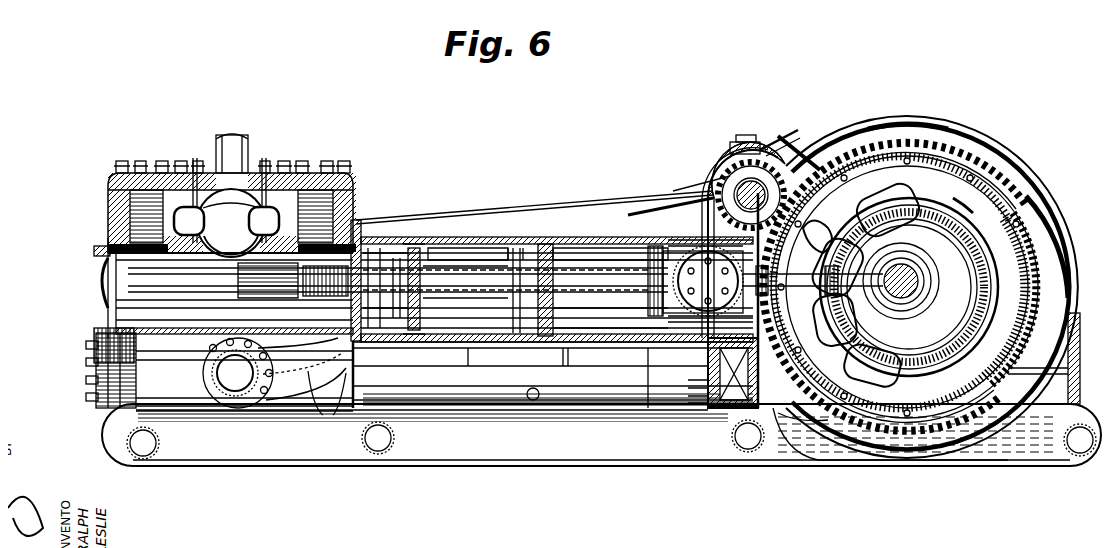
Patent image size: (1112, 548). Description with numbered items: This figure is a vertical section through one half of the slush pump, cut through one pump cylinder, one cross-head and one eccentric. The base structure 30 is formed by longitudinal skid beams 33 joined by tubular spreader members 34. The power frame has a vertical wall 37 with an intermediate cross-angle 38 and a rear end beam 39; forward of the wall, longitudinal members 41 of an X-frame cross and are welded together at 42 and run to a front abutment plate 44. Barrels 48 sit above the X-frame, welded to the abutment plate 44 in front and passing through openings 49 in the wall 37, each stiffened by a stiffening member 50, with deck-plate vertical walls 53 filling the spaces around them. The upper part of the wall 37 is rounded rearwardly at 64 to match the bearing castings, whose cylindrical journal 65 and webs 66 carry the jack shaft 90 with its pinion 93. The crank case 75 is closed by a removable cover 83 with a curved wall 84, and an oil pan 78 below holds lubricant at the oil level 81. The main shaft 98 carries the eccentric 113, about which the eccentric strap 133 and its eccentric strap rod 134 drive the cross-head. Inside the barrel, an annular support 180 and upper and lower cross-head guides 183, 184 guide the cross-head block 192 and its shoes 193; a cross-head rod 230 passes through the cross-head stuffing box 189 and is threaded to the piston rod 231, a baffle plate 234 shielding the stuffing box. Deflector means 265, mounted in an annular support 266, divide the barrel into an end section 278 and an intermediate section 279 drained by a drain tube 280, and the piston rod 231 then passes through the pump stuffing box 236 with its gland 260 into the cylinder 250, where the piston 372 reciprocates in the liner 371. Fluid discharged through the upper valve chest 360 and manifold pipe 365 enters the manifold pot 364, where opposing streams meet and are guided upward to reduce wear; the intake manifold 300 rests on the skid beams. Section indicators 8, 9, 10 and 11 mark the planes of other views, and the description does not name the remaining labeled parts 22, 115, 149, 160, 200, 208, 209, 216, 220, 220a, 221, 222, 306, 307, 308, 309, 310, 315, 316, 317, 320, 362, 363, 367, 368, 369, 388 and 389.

The section line 8- 8 is at (385, 195).
The section line 9- 9 is at (422, 225).
The section line 10- 10 is at (562, 213).
The section line 11- 11 is at (330, 318).
The gear housing bar 22 is at (805, 170).
The base structure 30 is at (493, 472).
The longitudinal skid beams 33 is at (560, 450).
The tubular spreader members 34 is at (1062, 440).
The vertical wall 37 is at (700, 378).
The intermediate cross-angle 38 is at (705, 394).
The end beam 39 is at (1073, 335).
The longitudinal members 41 is at (495, 356).
The weld 42 is at (455, 352).
The abutment plate 44 is at (333, 348).
The barrels 48 is at (455, 235).
The openings 49 is at (712, 348).
The stiffening member 50 is at (568, 205).
The vertical walls 53 is at (445, 398).
The rearwardly rounded portion 64 is at (698, 153).
The cylindrical journal 65 is at (764, 138).
The cross walls 66 is at (817, 235).
The crank case 75 is at (1028, 167).
The oil pan 78 is at (912, 452).
The oil level 81 is at (812, 408).
The removable cover 83 is at (991, 132).
The curved wall 84 is at (1035, 200).
The jack shaft 90 is at (722, 160).
The pinion 93 is at (693, 187).
The main shaft 98 is at (900, 256).
The eccentric 113 is at (1000, 268).
The gear web opening 115 is at (878, 205).
The eccentric strap 133 is at (1030, 232).
The eccentric strap rod 134 is at (837, 267).
The gear web opening 149 is at (835, 320).
The housing top 160 is at (900, 112).
The annular support 180 is at (530, 354).
The upper cross-head guide 183 is at (610, 240).
The lower cross-head guide 184 is at (608, 378).
The cross-head stuffing box 189 is at (506, 245).
The cross-head block 192 is at (758, 284).
The shoes 193 is at (610, 288).
The casing flange 200 is at (701, 273).
The gear web opening 208 is at (788, 352).
The housing bottom plate 209 is at (751, 405).
The housing wall 216 is at (746, 378).
The cap 220 is at (724, 138).
The cap plug 220a is at (735, 126).
The pinion housing ring 221 is at (705, 172).
The casing top flange 222 is at (701, 227).
The cross-head rod 230 is at (630, 284).
The piston rod 231 is at (398, 291).
The baffle plate 234 is at (515, 291).
The pump stuffing box 236 is at (302, 369).
The cylinders 250 is at (553, 351).
The gland 260 is at (385, 298).
The deflector means 265 is at (412, 302).
The annular support 266 is at (465, 260).
The end section 278 is at (375, 222).
The intermediate section 279 is at (485, 245).
The drain tube 280 is at (427, 298).
The intake manifold 300 is at (302, 404).
The pipe flange 306 is at (226, 400).
The pipe 307 is at (262, 398).
The pump cylinder 308 is at (190, 400).
The gland nut 309 is at (86, 402).
The gland 310 is at (86, 376).
The pump cylinder 315 is at (120, 370).
The gland ring 316 is at (86, 358).
The gland bolt 317 is at (86, 342).
The pipe connection 320 is at (333, 398).
The upper valve chest 360 is at (103, 190).
The valve body 362 is at (110, 232).
The plunger 363 is at (248, 286).
The manifold pot 364 is at (231, 244).
The manifold pipe 365 is at (226, 222).
The inlet pipe 367 is at (215, 133).
The valve 368 is at (256, 160).
The valve 369 is at (187, 160).
The liners 371 is at (190, 250).
The pistons 372 is at (290, 289).
The end flange 388 is at (100, 272).
The bolt 389 is at (86, 243).